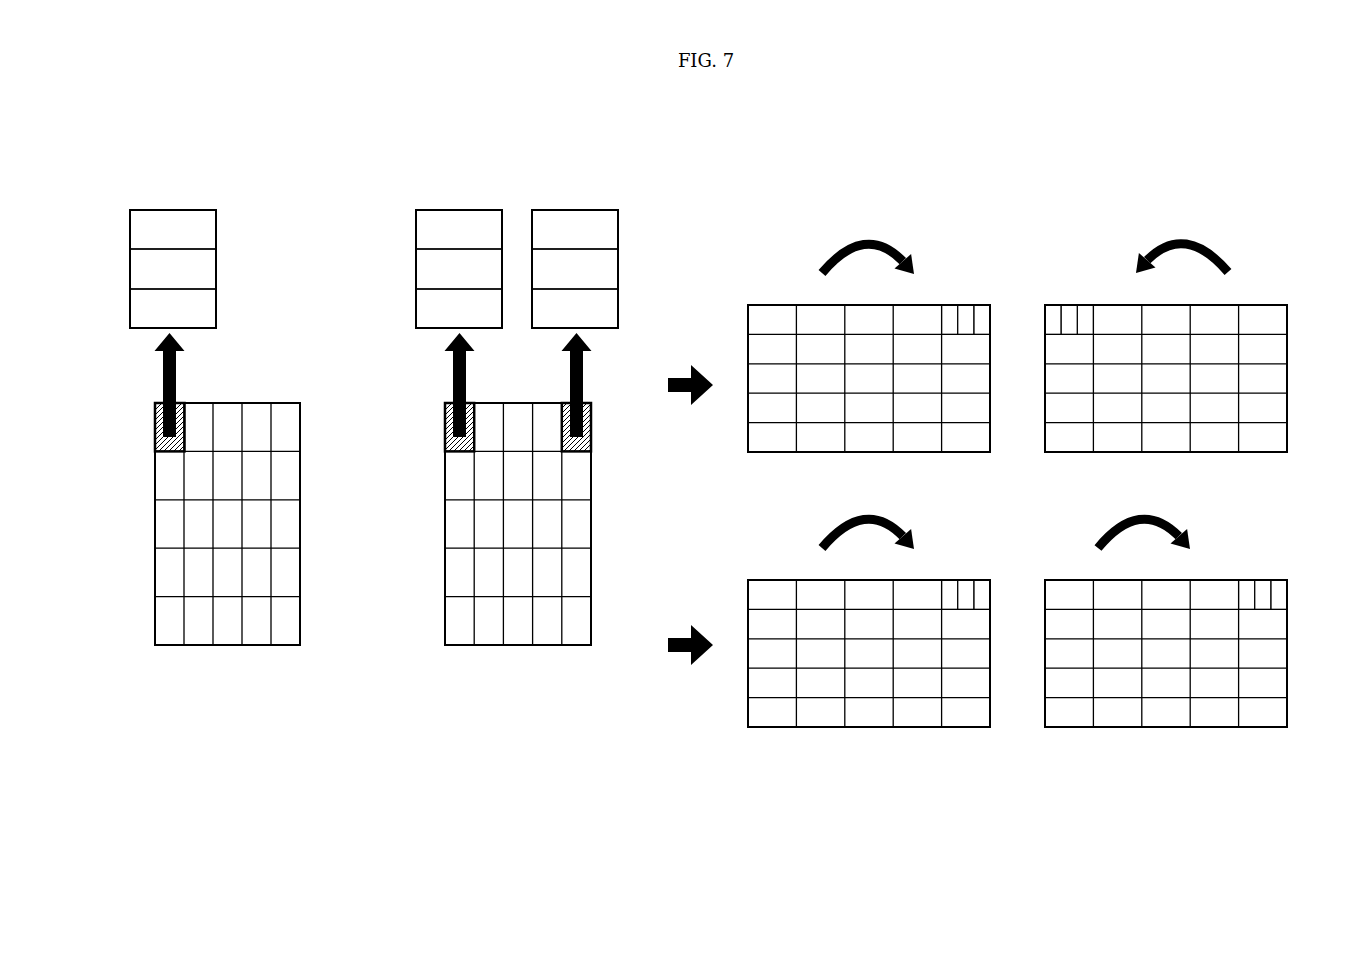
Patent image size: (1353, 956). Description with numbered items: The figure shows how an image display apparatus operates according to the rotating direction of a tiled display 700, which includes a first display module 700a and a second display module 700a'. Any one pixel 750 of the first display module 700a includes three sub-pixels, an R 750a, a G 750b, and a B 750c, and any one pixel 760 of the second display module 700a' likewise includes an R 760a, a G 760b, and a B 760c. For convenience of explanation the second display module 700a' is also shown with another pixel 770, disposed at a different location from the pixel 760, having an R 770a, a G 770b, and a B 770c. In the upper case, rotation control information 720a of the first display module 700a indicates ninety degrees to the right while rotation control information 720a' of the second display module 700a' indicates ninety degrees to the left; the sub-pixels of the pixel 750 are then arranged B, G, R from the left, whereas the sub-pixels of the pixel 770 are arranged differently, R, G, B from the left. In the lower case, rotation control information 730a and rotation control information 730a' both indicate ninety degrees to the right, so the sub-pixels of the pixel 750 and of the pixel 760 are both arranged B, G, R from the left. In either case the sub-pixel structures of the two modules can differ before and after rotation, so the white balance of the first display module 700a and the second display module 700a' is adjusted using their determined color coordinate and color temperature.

The tiled display 700 is at (500, 660).
The first display module 700a is at (572, 494).
The second display module 700a' is at (886, 490).
The rotation control information 720a is at (868, 236).
The rotation control information 720a' is at (1182, 235).
The rotation control information 730a is at (868, 511).
The rotation control information 730a' is at (1144, 511).
The pixel 750 is at (204, 202).
The R sub-pixel 750a is at (207, 228).
The G sub-pixel 750b is at (207, 268).
The B sub-pixel 750c is at (207, 308).
The pixel 760 is at (491, 202).
The R sub-pixel 760a is at (421, 229).
The G sub-pixel 760b is at (421, 269).
The B sub-pixel 760c is at (421, 308).
The pixel 770 is at (606, 202).
The R sub-pixel 770a is at (608, 228).
The G sub-pixel 770b is at (608, 268).
The B sub-pixel 770c is at (608, 308).